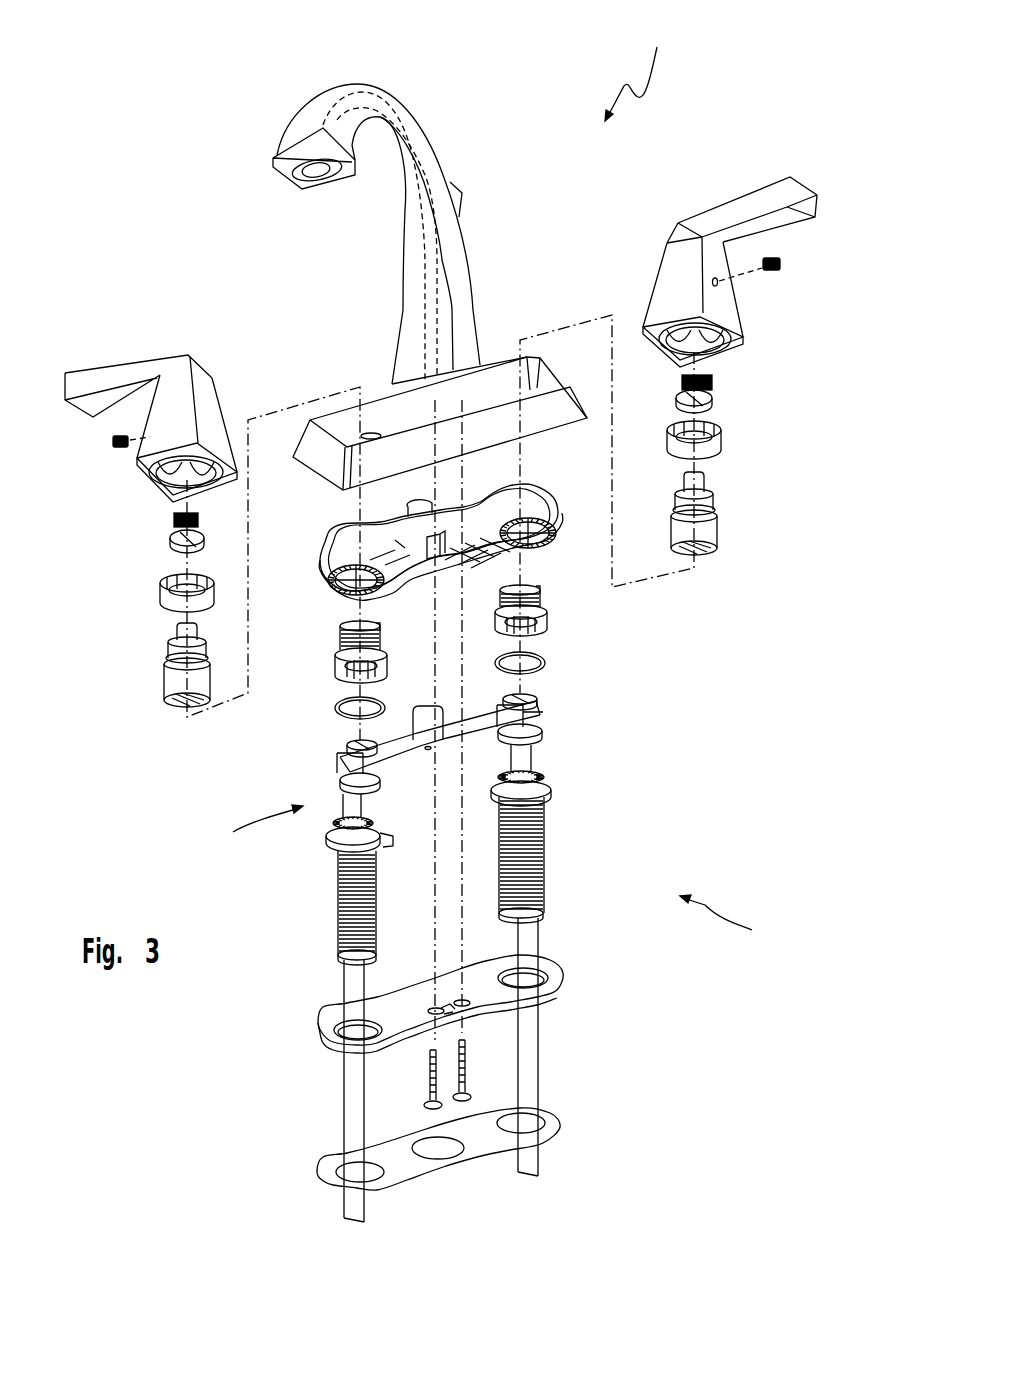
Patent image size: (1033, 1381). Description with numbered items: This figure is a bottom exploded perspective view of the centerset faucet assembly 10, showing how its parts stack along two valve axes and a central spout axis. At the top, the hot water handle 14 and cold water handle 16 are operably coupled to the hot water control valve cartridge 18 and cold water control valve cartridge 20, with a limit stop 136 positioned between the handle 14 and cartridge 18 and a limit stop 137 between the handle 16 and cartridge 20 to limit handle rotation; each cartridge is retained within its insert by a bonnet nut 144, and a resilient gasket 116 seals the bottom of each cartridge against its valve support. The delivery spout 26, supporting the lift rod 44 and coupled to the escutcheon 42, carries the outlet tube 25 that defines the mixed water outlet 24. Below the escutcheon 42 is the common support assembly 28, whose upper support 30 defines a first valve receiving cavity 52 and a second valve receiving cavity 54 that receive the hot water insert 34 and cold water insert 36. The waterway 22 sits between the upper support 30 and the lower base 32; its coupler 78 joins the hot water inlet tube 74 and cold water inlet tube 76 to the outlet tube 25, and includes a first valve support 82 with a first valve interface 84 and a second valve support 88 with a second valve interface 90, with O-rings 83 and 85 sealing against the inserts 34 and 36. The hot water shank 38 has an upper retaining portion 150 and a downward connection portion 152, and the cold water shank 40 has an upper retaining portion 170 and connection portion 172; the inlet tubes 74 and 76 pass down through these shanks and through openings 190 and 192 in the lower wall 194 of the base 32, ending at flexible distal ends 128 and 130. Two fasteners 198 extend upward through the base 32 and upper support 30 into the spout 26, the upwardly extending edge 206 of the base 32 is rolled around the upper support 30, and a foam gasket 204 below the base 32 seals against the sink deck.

The faucet assembly 10 is at (640, 68).
The hot water handle 14 is at (140, 357).
The cold water handle 16 is at (745, 193).
The hot water control valve cartridge 18 is at (168, 685).
The cold water control valve cartridge 20 is at (718, 525).
The waterway 22 is at (249, 826).
The mixed water outlet 24 is at (308, 175).
The outlet tube 25 is at (423, 293).
The delivery spout 26 is at (340, 90).
The common support assembly 28 is at (732, 922).
The upper support 30 is at (320, 532).
The lower base 32 is at (431, 1020).
The hot water insert 34 is at (337, 642).
The cold water insert 36 is at (547, 598).
The hot water shank 38 is at (337, 887).
The cold water shank 40 is at (545, 828).
The escutcheon 42 is at (500, 360).
The lift rod 44 is at (452, 180).
The first valve receiving cavity 52 is at (374, 594).
The second valve receiving cavity 54 is at (537, 548).
The hot water inlet tube 74 is at (345, 1088).
The cold water inlet tube 76 is at (533, 1053).
The coupler 78 is at (397, 760).
The first valve support 82 is at (333, 760).
The O-ring 83 is at (333, 710).
The first valve interface 84 is at (347, 745).
The O-ring 85 is at (543, 658).
The second valve support 88 is at (540, 728).
The second valve interface 90 is at (537, 697).
The resilient gasket 116 is at (180, 710).
The distal end 128 is at (347, 1203).
The distal end 130 is at (533, 1157).
The limit stop 136 is at (168, 535).
The limit stop 137 is at (712, 393).
The bonnet nut 144 is at (160, 593).
The upper retaining portion 150 is at (327, 832).
The connection portion 152 is at (335, 952).
The upper retaining portion 170 is at (552, 785).
The connection portion 172 is at (545, 902).
The opening 190 is at (360, 1030).
The opening 192 is at (543, 992).
The lower wall 194 is at (407, 1017).
The fasteners 198 is at (440, 1090).
The gasket 204 is at (444, 1152).
The upwardly extending edge 206 is at (318, 1013).